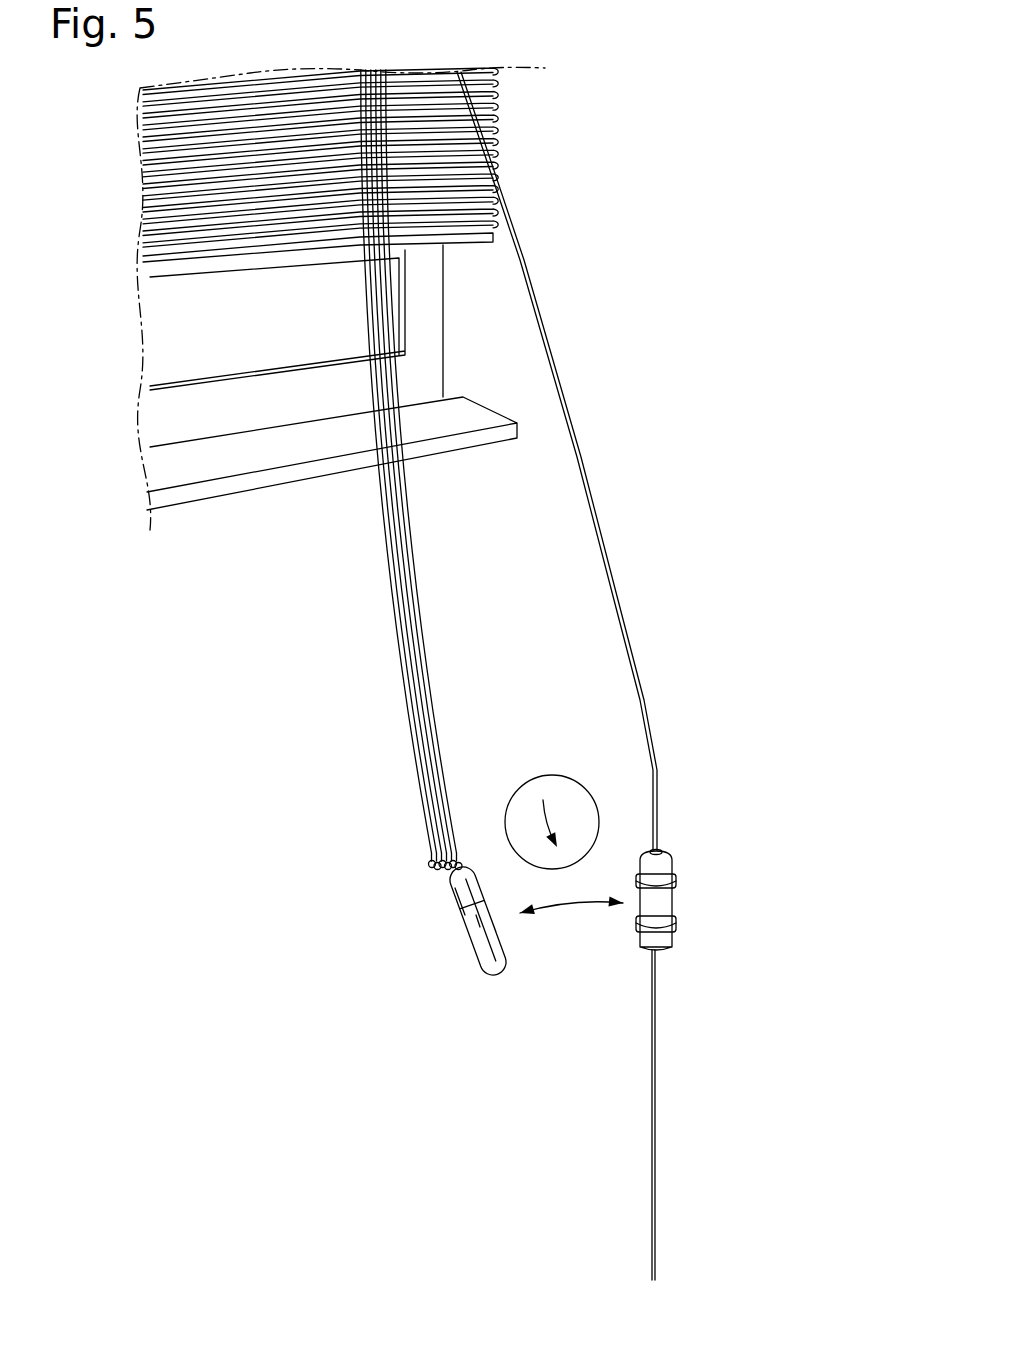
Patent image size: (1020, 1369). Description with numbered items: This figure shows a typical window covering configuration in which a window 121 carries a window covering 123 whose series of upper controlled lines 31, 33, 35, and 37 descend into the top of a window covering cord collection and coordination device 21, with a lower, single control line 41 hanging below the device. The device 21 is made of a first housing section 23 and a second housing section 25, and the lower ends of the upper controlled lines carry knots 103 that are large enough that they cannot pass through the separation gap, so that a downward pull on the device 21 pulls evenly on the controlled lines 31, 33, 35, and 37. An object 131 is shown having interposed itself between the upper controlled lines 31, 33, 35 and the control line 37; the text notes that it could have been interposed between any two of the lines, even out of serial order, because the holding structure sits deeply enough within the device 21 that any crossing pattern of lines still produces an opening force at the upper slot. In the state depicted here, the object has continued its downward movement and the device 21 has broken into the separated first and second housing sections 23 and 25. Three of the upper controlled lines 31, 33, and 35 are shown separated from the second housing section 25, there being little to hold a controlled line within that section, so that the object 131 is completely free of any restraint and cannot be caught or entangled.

The window covering 123 is at (537, 65).
The window 121 is at (438, 376).
The upper controlled line 37 is at (563, 394).
The upper controlled line 31 is at (386, 514).
The upper controlled line 33 is at (392, 556).
The upper controlled line 35 is at (404, 489).
The knots 103 is at (432, 868).
The first housing section 23 is at (481, 966).
The object 131 is at (553, 778).
The window covering cord collection and coordination device 21 is at (708, 869).
The second housing section 25 is at (668, 937).
The single control line 41 is at (655, 1100).